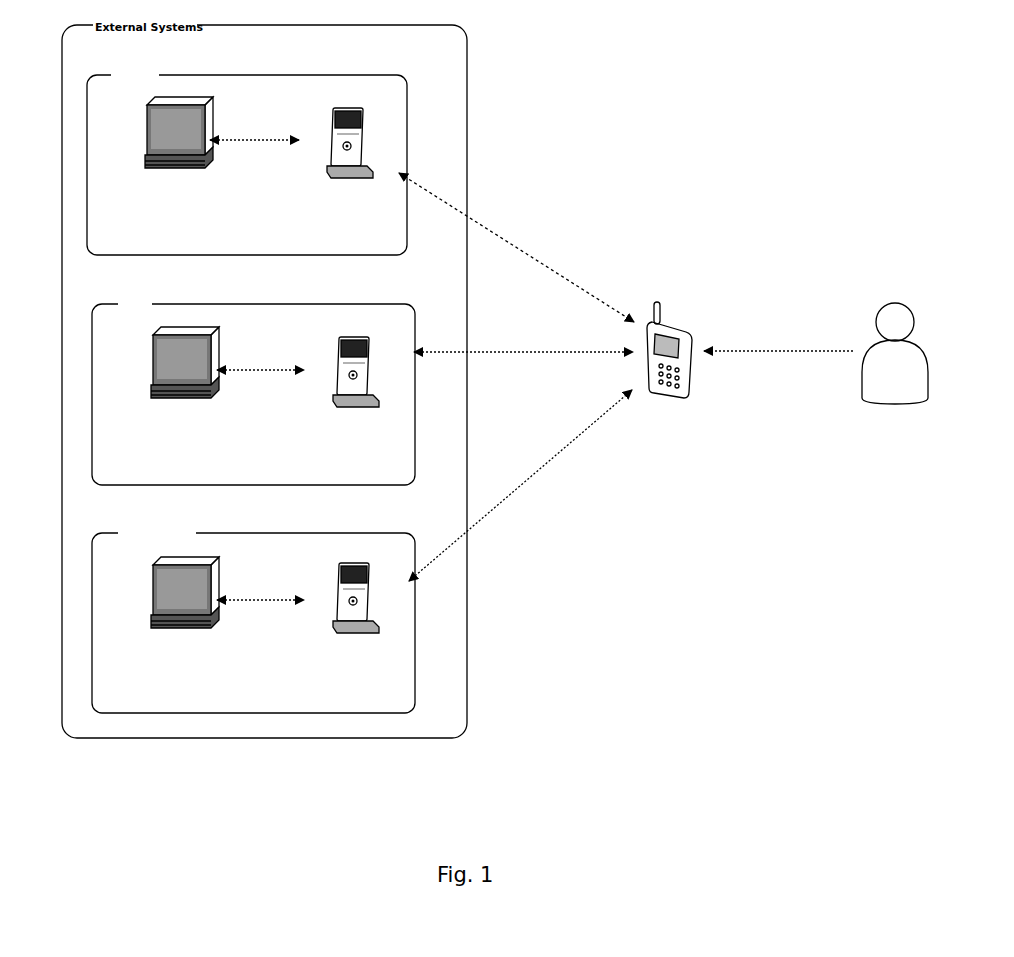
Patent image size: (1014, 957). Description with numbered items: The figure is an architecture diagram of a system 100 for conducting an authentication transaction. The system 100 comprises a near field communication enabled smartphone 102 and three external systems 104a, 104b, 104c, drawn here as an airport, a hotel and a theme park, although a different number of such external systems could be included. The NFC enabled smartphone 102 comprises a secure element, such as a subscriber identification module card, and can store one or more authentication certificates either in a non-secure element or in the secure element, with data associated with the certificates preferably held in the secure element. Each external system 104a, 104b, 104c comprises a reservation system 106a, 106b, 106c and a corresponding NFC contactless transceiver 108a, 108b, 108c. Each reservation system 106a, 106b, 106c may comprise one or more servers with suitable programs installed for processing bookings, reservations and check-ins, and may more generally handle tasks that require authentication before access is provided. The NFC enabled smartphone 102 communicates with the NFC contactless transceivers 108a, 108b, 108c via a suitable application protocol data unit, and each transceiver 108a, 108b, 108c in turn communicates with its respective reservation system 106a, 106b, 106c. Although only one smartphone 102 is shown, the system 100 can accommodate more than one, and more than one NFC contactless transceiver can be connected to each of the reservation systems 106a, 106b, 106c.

The system for conducting an authentication transaction 100 is at (96, 804).
The NFC enabled smartphone 102 is at (648, 392).
The external system 104a is at (210, 190).
The external system 104b is at (212, 419).
The external system 104c is at (222, 658).
The reservation system 106a is at (147, 167).
The reservation system 106b is at (152, 398).
The reservation system 106c is at (150, 628).
The NFC contactless transceiver 108a is at (313, 173).
The NFC contactless transceiver 108b is at (322, 403).
The NFC contactless transceiver 108c is at (317, 633).